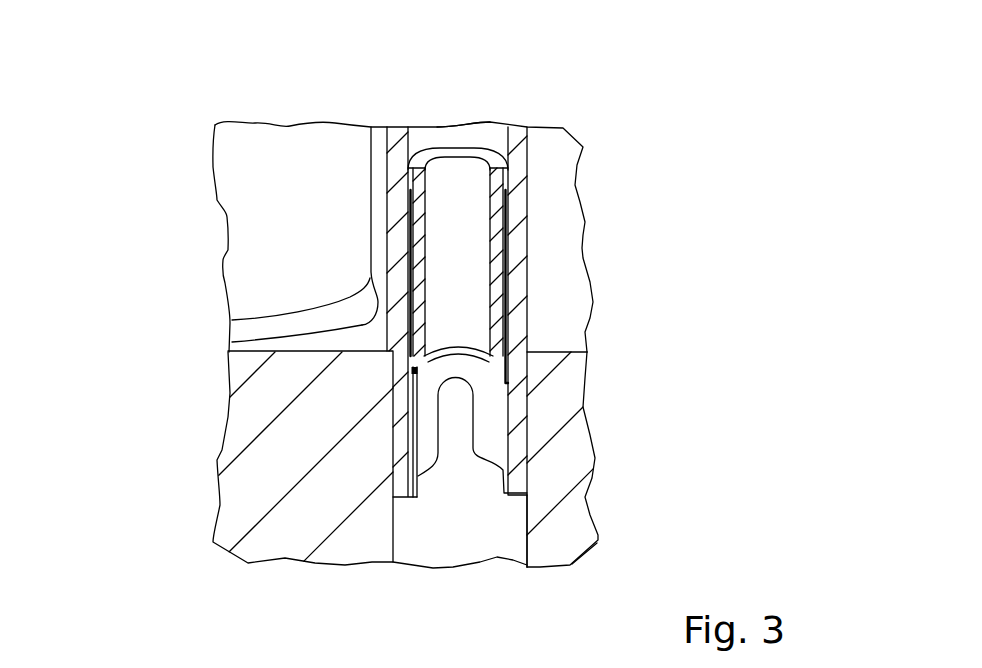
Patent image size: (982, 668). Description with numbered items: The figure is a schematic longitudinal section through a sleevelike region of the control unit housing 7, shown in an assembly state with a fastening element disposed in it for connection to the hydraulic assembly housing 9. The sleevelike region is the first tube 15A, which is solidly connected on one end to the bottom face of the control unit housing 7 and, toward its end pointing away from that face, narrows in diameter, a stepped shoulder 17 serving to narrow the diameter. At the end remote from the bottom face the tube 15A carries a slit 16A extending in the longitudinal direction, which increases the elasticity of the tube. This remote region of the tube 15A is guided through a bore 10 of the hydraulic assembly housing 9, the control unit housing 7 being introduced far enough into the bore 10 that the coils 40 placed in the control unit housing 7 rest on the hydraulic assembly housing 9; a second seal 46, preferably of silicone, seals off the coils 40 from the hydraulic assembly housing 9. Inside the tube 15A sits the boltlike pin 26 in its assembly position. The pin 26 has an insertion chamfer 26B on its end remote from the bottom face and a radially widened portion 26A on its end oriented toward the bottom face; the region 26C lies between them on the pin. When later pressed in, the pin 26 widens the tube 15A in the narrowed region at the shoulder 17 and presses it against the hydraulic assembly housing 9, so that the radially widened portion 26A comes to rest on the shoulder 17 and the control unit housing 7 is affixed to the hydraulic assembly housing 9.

The control unit housing 7 is at (450, 124).
The hydraulic assembly housing 9 is at (592, 492).
The bore 10 is at (527, 545).
The first tube 15A is at (387, 148).
The slit 16A is at (425, 472).
The stepped shoulder 17 is at (410, 375).
The boltlike pin 26 is at (408, 216).
The radially widened portion 26A is at (507, 181).
The insertion chamfer 26B is at (505, 332).
The sleeve middle portion 26C is at (490, 237).
The coils 40 is at (283, 262).
The second seal 46 is at (253, 328).